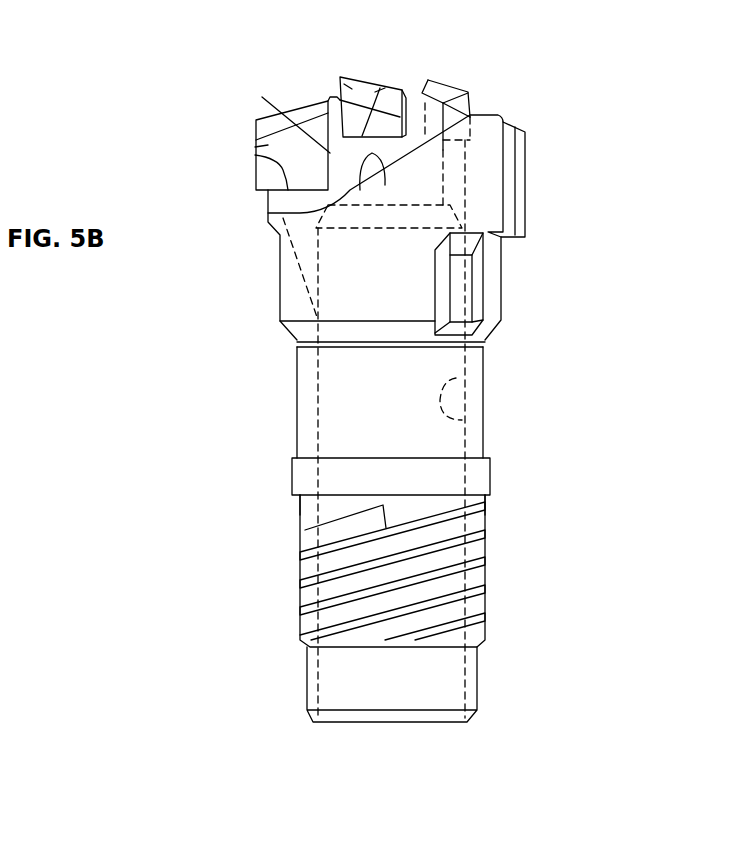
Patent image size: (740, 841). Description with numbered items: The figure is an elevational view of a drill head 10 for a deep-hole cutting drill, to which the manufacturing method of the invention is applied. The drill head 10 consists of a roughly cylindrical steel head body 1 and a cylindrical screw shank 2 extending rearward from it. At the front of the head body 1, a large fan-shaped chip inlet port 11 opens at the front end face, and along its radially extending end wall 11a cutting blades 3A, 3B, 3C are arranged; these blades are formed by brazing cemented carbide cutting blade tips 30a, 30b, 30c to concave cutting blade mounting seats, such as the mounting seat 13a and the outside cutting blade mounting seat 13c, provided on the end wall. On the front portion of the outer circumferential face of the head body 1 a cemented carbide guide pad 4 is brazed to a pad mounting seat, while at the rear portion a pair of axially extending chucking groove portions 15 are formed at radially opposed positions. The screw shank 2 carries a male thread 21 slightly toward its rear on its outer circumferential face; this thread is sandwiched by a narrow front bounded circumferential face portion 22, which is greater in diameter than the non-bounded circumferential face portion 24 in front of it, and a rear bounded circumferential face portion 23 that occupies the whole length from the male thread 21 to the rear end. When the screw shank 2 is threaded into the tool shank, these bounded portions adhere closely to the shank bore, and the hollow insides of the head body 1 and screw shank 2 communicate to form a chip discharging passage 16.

The head body 1 is at (272, 257).
The screw shank 2 is at (282, 423).
The cutting blade 3A is at (361, 78).
The cutting blade 3B is at (432, 85).
The cutting blade 3C is at (285, 128).
The guide pad 4 is at (527, 172).
The drill head 10 is at (252, 523).
The chip inlet port 11 is at (385, 185).
The end wall 11a is at (262, 97).
The cutting blade mounting seat 13a is at (380, 90).
The outside cutting blade mounting seat 13c is at (255, 155).
The chucking groove portion 15 is at (462, 295).
The chip discharging passage 16 is at (465, 420).
The male thread 21 is at (483, 551).
The bounded circumferential face portion 22 is at (478, 479).
The bounded circumferential face portion 23 is at (333, 675).
The non-bounded circumferential face portion 24 is at (332, 398).
The cutting blade tip 30a is at (348, 87).
The cutting blade tip 30b is at (467, 98).
The cutting blade tip 30c is at (255, 147).